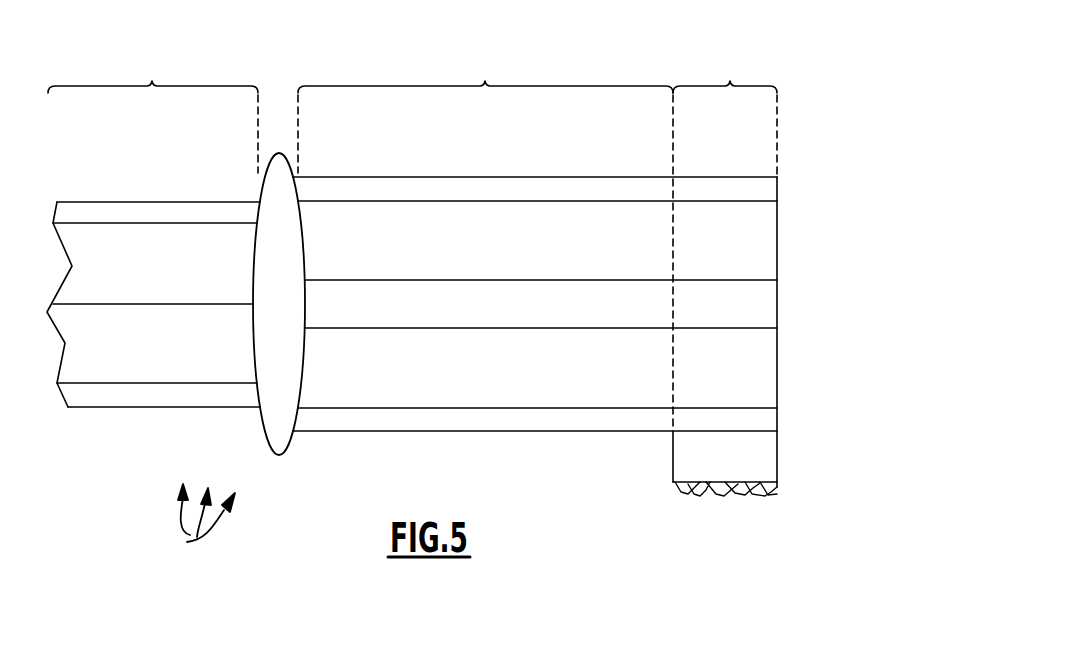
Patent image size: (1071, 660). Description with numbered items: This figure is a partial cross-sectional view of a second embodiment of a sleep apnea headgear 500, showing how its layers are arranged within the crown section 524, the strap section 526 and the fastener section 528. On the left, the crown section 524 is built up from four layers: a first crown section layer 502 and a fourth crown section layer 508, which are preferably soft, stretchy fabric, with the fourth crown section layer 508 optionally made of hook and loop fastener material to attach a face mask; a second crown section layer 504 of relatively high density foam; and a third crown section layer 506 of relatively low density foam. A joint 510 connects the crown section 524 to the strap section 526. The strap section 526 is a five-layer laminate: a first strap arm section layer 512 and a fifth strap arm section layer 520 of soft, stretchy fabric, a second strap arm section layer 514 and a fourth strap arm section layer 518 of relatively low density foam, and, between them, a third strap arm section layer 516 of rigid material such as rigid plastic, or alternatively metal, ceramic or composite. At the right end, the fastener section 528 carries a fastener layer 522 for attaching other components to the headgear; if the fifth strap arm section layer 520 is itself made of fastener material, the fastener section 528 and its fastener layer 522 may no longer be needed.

The headgear 500 is at (176, 556).
The first crown section layer 502 is at (125, 202).
The second crown section layer 504 is at (175, 223).
The third crown section layer 506 is at (90, 383).
The fourth crown section layer 508 is at (172, 408).
The joint 510 is at (279, 455).
The first strap arm section layer 512 is at (397, 177).
The second strap arm section layer 514 is at (488, 201).
The third strap arm section layer 516 is at (573, 280).
The fourth strap arm section layer 518 is at (380, 408).
The fifth strap arm section layer 520 is at (492, 431).
The fastener layer 522 is at (673, 467).
The crown section 524 is at (152, 81).
The strap section 526 is at (485, 81).
The fastener section 528 is at (730, 81).